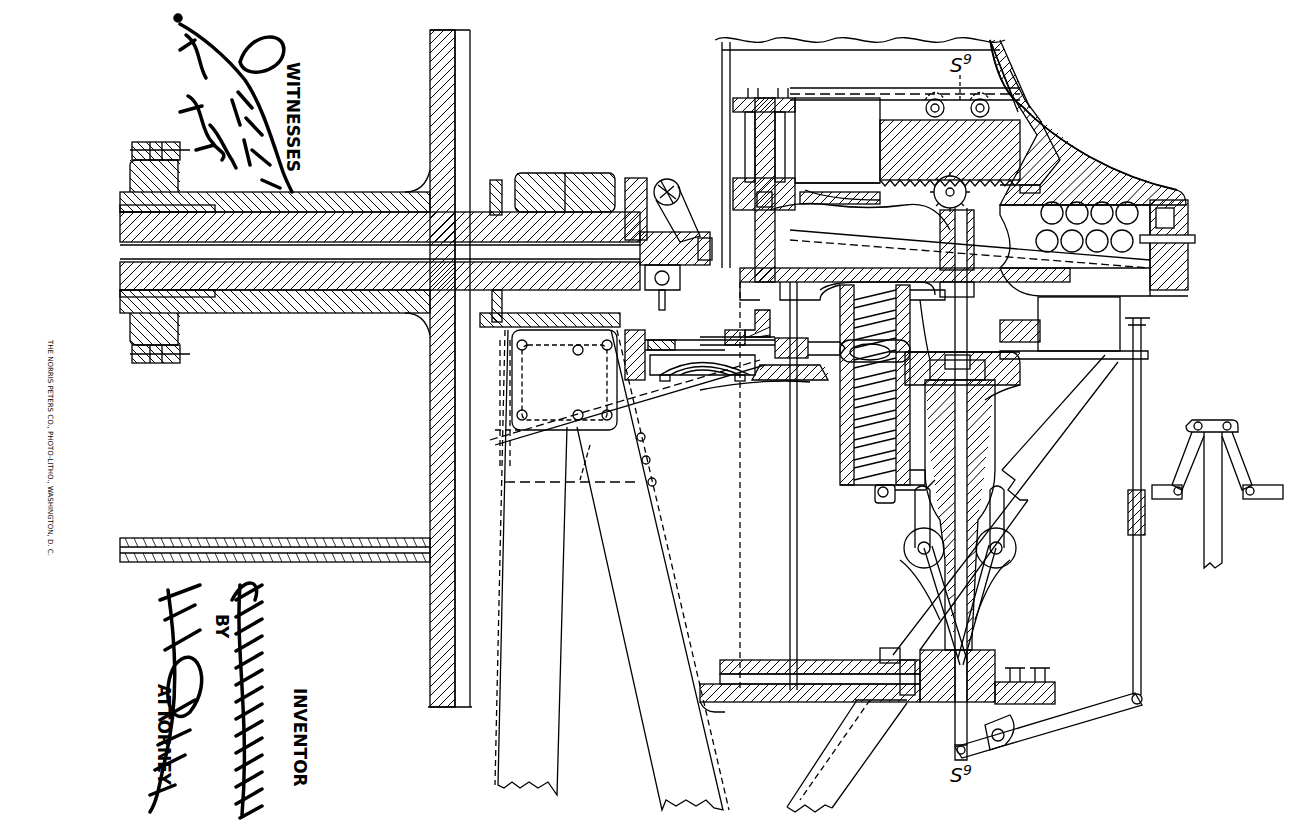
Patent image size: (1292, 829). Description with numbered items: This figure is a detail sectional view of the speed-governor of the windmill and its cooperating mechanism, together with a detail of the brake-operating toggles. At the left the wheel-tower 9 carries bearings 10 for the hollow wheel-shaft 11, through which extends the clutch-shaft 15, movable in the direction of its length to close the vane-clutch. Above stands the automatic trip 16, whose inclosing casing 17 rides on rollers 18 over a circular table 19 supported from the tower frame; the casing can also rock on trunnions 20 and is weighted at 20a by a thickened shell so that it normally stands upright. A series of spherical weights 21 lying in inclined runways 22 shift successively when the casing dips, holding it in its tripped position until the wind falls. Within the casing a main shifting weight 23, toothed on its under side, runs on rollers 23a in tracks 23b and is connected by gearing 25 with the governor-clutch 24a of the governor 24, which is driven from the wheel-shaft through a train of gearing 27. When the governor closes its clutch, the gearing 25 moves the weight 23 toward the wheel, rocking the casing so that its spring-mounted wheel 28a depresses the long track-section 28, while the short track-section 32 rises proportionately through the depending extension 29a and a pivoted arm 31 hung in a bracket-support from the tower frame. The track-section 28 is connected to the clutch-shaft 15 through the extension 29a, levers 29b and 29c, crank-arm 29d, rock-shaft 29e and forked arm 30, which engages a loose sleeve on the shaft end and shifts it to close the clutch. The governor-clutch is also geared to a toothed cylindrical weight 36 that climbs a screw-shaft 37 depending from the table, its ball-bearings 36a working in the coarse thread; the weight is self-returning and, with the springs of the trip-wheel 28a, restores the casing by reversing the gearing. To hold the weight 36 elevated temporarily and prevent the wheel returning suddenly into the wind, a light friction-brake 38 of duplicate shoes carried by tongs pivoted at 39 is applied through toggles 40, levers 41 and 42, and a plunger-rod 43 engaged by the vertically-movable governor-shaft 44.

In FIG. 5, the wheel-tower 9 is at (630, 682).
In FIG. 5, the bearings 10 is at (548, 200).
In FIG. 5, the hollow wheel-shaft 11 is at (378, 292).
In FIG. 5, the clutch-shaft 15 is at (357, 242).
In FIG. 5, the automatic trip 16 is at (1090, 150).
In FIG. 5, the inclosing casing 17 is at (870, 55).
In FIG. 5, the rollers 18 is at (1180, 195).
In FIG. 5, the circular table 19 is at (1150, 280).
In FIG. 5, the trunnions 20 is at (1045, 175).
In FIG. 5, the weighted portion 20a is at (1140, 180).
In FIG. 5, the spherical weights 21 is at (1160, 255).
In FIG. 5, the runways 22 is at (1170, 265).
In FIG. 5, the main shifting weight 23 is at (880, 150).
In FIG. 5, the rollers 23a is at (1040, 62).
In FIG. 5, the guides or tracks 23b is at (985, 60).
In FIG. 5, the governor 24 is at (905, 570).
In FIG. 5, the governor-clutch 24a is at (975, 476).
In FIG. 5, the gearing 25 is at (934, 200).
In FIG. 5, the train of gearing 27 is at (640, 180).
In FIG. 5, the track-section 28 is at (762, 285).
In FIG. 5, the spring-mounted wheel 28a is at (720, 180).
In FIG. 5, the depending track extension 29a is at (860, 330).
In FIG. 5, the lever 29b is at (700, 395).
In FIG. 5, the lever 29c is at (510, 383).
In FIG. 5, the crank-arm 29d is at (612, 195).
In FIG. 5, the rock-shaft 29e is at (760, 195).
In FIG. 5, the forked arm 30 is at (680, 238).
In FIG. 5, the pin 31 is at (900, 500).
In FIG. 5, the track-section 32 is at (905, 282).
In FIG. 5, the toothed cylindrical weight 36 is at (840, 480).
In FIG. 5, the antifriction-rollers or ball-bearings 36a is at (855, 458).
In FIG. 5, the screw-shaft 37 is at (862, 488).
In FIG. 5, the friction-brake 38 is at (914, 345).
In FIG. 5, the pivot 39 is at (995, 372).
In FIG. 5, the toggles 40 is at (1140, 340).
In FIG. 5A, the toggles 40 is at (1188, 450).
In FIG. 5, the lever 41 is at (1138, 558).
In FIG. 5A, the lever 41 is at (1222, 515).
In FIG. 5, the lever 42 is at (1075, 712).
In FIG. 5, the plunger-rod 43 is at (950, 725).
In FIG. 5, the governor-shaft 44 is at (985, 670).